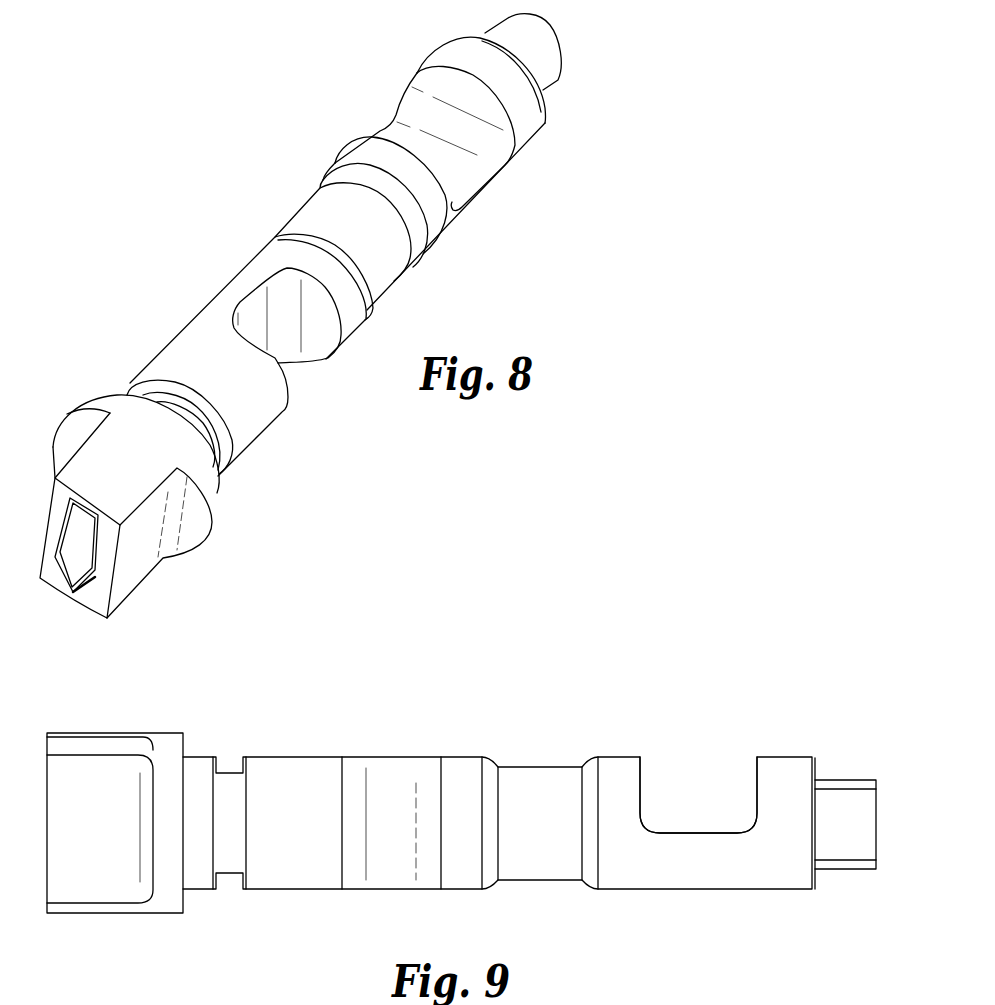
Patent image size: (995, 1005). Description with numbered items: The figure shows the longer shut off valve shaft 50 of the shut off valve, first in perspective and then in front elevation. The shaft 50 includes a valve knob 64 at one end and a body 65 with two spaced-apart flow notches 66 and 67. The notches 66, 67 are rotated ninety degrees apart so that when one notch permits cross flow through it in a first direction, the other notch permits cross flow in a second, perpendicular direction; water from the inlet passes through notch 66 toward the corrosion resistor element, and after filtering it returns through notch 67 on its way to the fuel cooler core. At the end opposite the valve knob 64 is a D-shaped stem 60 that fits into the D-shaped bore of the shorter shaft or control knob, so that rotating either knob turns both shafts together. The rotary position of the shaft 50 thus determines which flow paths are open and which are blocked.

In FIG. 8, the shut off valve shaft 50 is at (565, 233).
In FIG. 9, the shut off valve shaft 50 is at (588, 688).
In FIG. 8, the stem 60 is at (527, 45).
In FIG. 8, the valve knob 64 is at (132, 543).
In FIG. 9, the valve knob 64 is at (163, 890).
In FIG. 8, the body 65 is at (345, 300).
In FIG. 9, the body 65 is at (399, 772).
In FIG. 8, the flow notch 66 is at (307, 377).
In FIG. 8, the flow notch 67 is at (368, 114).
In FIG. 9, the flow notch 67 is at (695, 793).